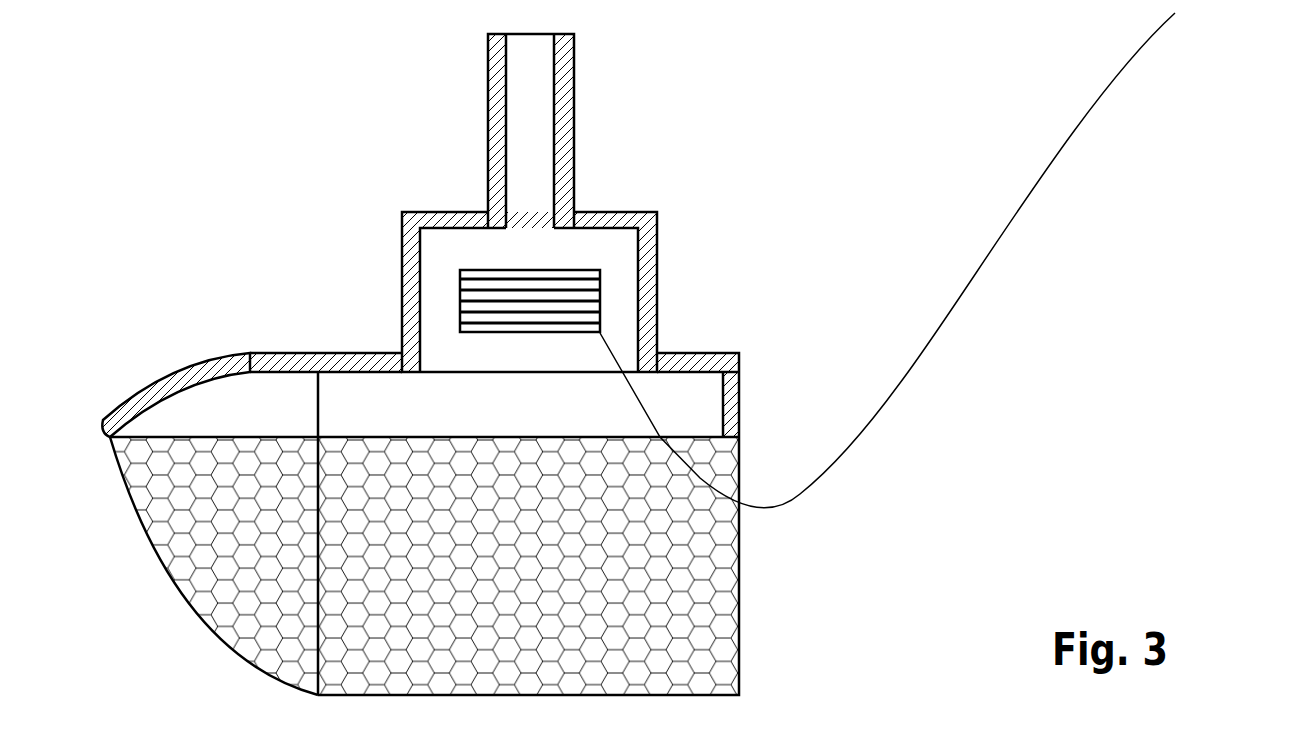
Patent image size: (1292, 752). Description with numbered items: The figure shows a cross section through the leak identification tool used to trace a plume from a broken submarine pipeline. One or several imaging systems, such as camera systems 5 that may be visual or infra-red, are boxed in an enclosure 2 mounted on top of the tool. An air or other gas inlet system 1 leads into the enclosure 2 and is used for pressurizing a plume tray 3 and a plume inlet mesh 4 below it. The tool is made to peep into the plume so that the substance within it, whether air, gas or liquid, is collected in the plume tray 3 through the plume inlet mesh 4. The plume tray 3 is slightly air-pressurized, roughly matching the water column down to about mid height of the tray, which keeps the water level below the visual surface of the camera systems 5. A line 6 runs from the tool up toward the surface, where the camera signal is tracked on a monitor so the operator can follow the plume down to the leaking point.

The gas inlet system 1 is at (540, 102).
The enclosure 2 is at (647, 277).
The plume tray 3 is at (698, 406).
The plume inlet mesh 4 is at (723, 583).
The camera systems 5 is at (460, 299).
The cable 6 is at (1000, 248).